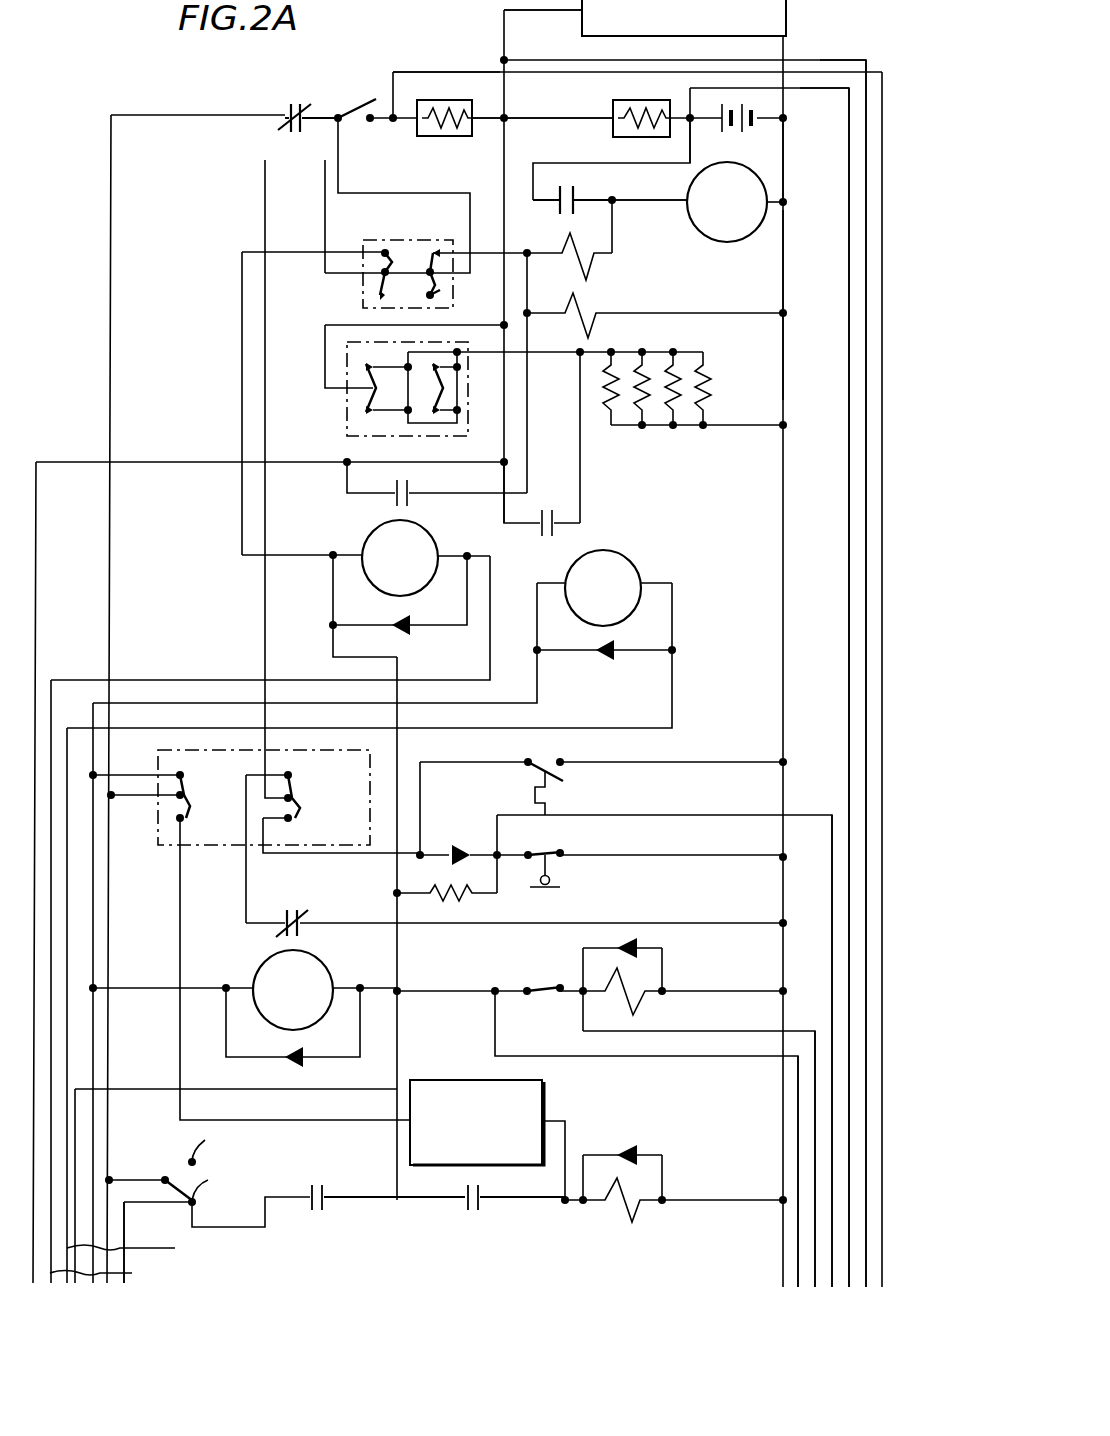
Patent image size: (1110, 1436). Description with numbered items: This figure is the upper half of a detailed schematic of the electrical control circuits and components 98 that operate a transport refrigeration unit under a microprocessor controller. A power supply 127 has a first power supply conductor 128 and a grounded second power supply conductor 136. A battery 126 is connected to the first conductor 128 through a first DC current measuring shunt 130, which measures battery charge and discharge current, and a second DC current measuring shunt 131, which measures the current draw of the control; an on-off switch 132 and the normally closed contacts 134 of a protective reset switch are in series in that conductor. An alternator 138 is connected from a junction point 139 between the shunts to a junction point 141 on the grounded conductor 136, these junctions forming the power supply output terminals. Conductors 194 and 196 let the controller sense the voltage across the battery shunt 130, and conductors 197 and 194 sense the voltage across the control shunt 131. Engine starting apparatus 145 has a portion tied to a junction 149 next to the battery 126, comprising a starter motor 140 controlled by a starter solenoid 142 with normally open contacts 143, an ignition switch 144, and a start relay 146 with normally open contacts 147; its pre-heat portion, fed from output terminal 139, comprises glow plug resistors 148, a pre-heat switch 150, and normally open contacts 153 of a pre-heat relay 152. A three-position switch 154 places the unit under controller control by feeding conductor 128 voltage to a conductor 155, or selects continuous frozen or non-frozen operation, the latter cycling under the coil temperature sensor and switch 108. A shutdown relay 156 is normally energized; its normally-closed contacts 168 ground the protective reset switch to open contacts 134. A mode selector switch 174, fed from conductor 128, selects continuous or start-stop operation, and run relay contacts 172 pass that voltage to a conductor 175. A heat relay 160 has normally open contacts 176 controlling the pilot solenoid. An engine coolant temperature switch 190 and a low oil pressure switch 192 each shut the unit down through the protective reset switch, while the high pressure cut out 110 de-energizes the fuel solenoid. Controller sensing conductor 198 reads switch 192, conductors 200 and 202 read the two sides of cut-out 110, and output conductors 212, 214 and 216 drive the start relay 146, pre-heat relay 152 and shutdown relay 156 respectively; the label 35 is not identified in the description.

The electrical control circuits and components 98 is at (457, 644).
The power supply 127 is at (684, 24).
The alternator 138 is at (582, 30).
The conductor 197 is at (393, 70).
The conductor 194 is at (798, 62).
The conductor 196 is at (812, 88).
The second power supply conductor 136 is at (787, 232).
The junction point 141 is at (786, 125).
The conductor 198 is at (712, 815).
The conductor 200 is at (470, 898).
The conductor 202 is at (717, 1057).
The first power supply conductor 128 is at (111, 128).
The normally closed contacts 134 is at (288, 105).
The on-off switch 132 is at (365, 97).
The second DC current measuring shunt 131 is at (421, 137).
The junction point 139 is at (508, 116).
The first DC current measuring shunt 130 is at (612, 130).
The junction 149 is at (688, 125).
The battery 126 is at (738, 132).
The normally open contacts 143 is at (568, 190).
The engine starting apparatus 145 is at (649, 217).
The starter motor 140 is at (728, 242).
The starter solenoid 142 is at (608, 363).
The ignition switch 144 is at (395, 240).
The pre-heat switch 150 is at (347, 422).
The glow plug resistors 148 is at (705, 365).
The normally open contacts 147 is at (385, 496).
The normally open contacts 153 is at (550, 512).
The start relay 146 is at (270, 860).
The pre-heat relay 152 is at (373, 638).
The three-position switch 154 is at (215, 845).
The engine coolant temperature switch 190 is at (530, 768).
The low oil pressure switch 192 is at (555, 870).
The normally-closed contacts 168 is at (295, 905).
The conductor 155 is at (93, 952).
The shutdown relay 156 is at (309, 1008).
The conductor 175 is at (402, 1015).
The high pressure cut out 110 is at (548, 1000).
The conductor 216 is at (118, 1089).
The coil temperature sensor and switch 108 is at (548, 1102).
The mode selector switch 174 is at (211, 1175).
The conductor line 35 is at (124, 1222).
The normally open contacts 172 is at (316, 1208).
The normally open contacts 176 is at (470, 1210).
The heat relay 160 is at (641, 1192).
The conductor 214 is at (139, 1249).
The conductor 212 is at (111, 1274).